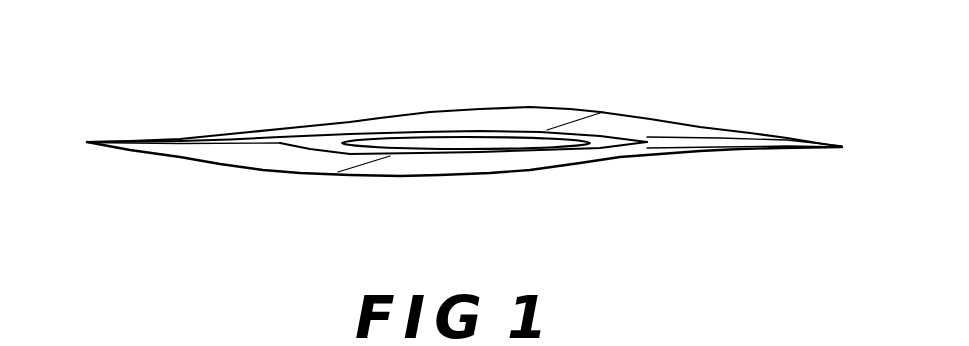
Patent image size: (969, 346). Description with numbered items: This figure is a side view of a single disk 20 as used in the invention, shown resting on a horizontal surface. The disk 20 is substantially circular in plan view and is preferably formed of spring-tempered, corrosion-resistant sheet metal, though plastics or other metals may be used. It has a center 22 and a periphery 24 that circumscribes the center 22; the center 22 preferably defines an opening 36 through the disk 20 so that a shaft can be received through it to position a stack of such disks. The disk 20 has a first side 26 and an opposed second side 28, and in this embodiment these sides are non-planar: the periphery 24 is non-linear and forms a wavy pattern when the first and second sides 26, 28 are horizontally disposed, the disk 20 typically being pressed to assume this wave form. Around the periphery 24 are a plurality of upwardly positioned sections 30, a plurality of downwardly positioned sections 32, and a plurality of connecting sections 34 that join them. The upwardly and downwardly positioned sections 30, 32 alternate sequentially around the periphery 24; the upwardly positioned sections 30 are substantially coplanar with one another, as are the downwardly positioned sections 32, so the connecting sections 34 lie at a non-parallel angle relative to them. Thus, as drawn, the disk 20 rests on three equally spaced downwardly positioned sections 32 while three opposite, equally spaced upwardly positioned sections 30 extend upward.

The disk 20 is at (692, 132).
The center 22 is at (520, 142).
The periphery 24 is at (628, 113).
The first side 26 is at (435, 125).
The second side 28 is at (522, 172).
The upwardly positioned sections 30 is at (503, 118).
The downwardly positioned sections 32 is at (390, 175).
The connecting sections 34 is at (263, 168).
The opening 36 is at (393, 143).